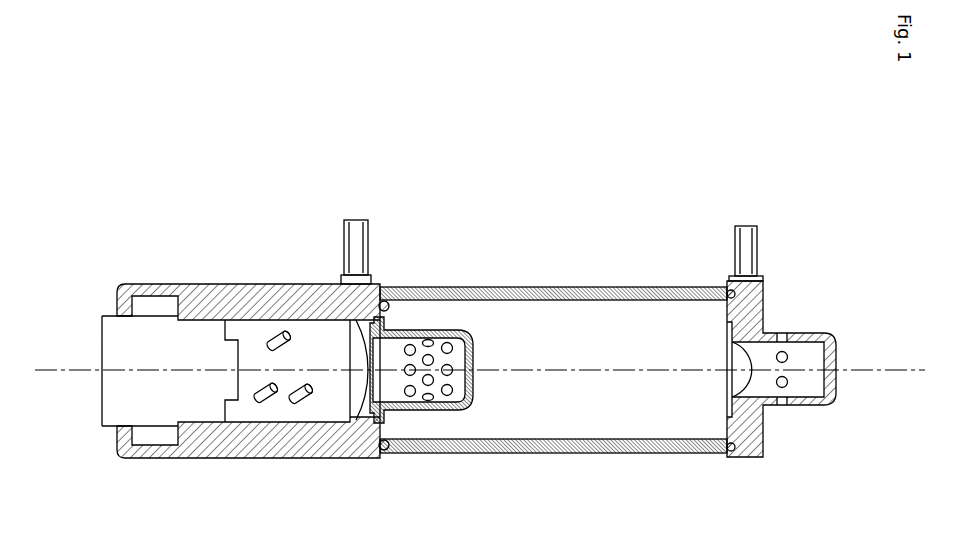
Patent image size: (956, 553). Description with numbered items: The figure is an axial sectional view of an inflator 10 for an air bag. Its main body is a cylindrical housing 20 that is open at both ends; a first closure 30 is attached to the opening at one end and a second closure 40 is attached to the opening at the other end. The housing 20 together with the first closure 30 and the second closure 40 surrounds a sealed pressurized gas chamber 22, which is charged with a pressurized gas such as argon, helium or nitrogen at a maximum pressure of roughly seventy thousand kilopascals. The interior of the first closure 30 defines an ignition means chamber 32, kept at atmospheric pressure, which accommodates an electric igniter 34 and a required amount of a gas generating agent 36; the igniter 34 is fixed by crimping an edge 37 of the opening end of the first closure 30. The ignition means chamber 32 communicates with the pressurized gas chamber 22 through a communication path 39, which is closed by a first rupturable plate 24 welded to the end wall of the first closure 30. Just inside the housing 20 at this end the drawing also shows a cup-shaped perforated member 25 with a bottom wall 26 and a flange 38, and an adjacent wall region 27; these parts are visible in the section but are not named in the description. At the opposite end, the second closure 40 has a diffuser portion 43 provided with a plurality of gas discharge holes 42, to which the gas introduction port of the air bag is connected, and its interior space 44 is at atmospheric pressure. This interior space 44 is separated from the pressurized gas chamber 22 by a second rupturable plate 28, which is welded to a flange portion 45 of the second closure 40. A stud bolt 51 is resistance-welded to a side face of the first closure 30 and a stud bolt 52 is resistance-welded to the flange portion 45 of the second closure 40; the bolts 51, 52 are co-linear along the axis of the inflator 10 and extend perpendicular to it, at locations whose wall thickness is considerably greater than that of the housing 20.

The inflator 10 is at (470, 260).
The cylindrical housing 20 is at (628, 287).
The pressurized gas chamber 22 is at (600, 335).
The first rupturable plate 24 is at (353, 357).
The perforated cup 25 is at (478, 357).
The cup bottom wall 26 is at (445, 410).
The tube bottom wall region 27 is at (407, 453).
The second rupturable plate 28 is at (733, 383).
The first closure 30 is at (195, 272).
The ignition means chamber 32 is at (310, 350).
The electric igniter 34 is at (113, 405).
The gas generating agent 36 is at (255, 400).
The edge of opening end 37 is at (117, 303).
The cup flange 38 is at (385, 326).
The communication path 39 is at (352, 393).
The second closure 40 is at (802, 327).
The gas discharge holes 42 is at (781, 403).
The diffuser portion 43 is at (834, 387).
The interior space 44 is at (797, 365).
The flange portion 45 is at (743, 458).
The stud bolt 51 is at (356, 226).
The stud bolt 52 is at (745, 228).